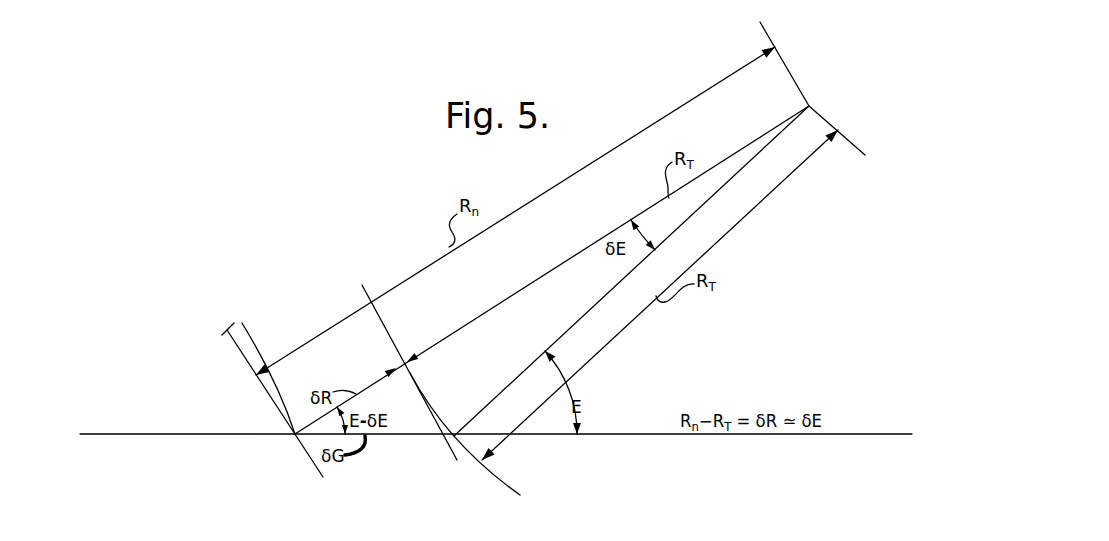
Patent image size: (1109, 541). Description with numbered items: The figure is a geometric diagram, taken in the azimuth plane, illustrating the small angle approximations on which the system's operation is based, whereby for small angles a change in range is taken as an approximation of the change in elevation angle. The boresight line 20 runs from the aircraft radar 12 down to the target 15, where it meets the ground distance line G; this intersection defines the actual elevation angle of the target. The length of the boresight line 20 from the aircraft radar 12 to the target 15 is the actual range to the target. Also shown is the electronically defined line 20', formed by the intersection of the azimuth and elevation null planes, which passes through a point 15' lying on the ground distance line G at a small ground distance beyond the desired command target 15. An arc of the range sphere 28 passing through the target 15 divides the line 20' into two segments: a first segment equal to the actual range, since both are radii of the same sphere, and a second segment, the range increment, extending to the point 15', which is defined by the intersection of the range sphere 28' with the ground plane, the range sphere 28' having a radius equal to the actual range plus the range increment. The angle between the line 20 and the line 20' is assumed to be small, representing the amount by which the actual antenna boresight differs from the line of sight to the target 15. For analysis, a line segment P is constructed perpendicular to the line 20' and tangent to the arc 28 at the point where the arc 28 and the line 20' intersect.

The aircraft radar 12 is at (809, 106).
The target 15 is at (409, 378).
The point on ground line 15' is at (275, 403).
The boresight line 20 is at (631, 271).
The electronically defined line 20' is at (552, 270).
The range sphere arc 28 is at (486, 434).
The range sphere 28' is at (242, 378).
The line segment P is at (444, 424).
The ground distance line G is at (640, 437).